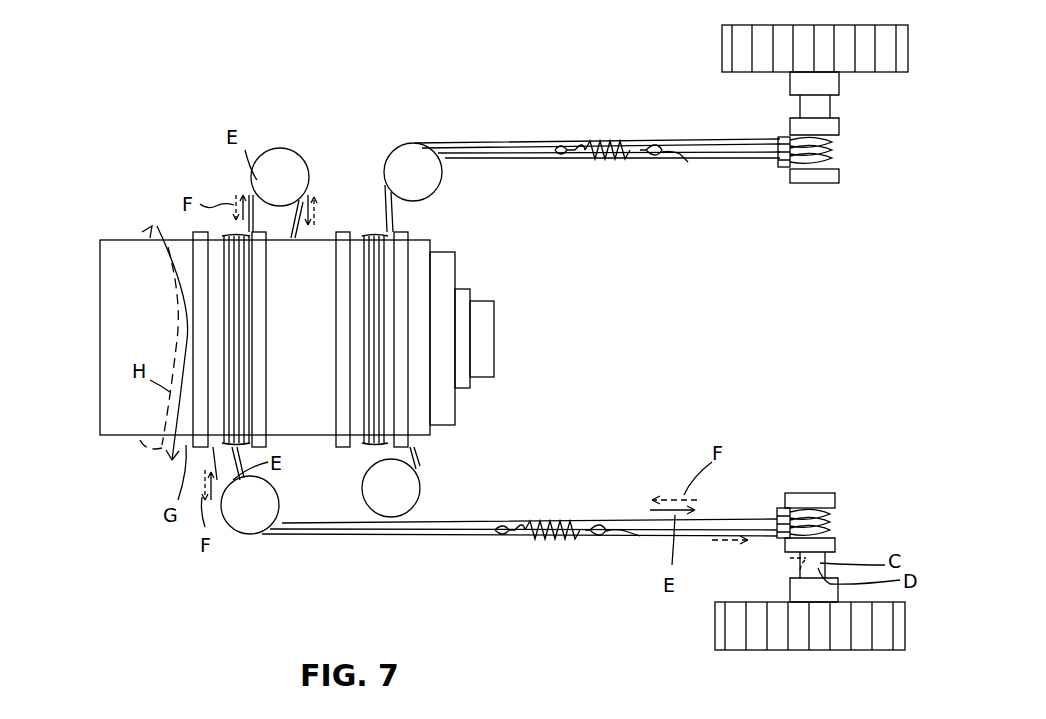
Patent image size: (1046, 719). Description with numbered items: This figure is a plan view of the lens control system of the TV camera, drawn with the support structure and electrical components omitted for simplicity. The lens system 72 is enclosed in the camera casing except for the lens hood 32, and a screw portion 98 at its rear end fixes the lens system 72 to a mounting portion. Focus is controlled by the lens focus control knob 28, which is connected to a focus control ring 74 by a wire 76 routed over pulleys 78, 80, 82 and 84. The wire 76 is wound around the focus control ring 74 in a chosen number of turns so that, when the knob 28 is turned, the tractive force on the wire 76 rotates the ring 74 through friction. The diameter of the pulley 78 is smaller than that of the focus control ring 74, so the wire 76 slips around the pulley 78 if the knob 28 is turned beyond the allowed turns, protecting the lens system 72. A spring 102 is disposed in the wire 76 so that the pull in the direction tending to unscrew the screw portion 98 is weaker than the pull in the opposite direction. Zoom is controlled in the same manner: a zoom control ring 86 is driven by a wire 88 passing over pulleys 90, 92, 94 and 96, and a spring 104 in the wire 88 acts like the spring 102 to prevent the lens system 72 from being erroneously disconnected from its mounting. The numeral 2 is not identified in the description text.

The supply reel 2 is at (893, 46).
The lens focus control knob 28 is at (852, 640).
The lens hood 32 is at (100, 380).
The lens system 72 is at (316, 275).
The focus control ring 74 is at (213, 452).
The wire 76 is at (633, 520).
The pulley 78 is at (812, 500).
The pulley 80 is at (775, 540).
The pulley 82 is at (253, 518).
The pulley 84 is at (281, 160).
The zoom control ring 86 is at (345, 432).
The wire 88 is at (720, 160).
The pulley 90 is at (817, 178).
The pulley 92 is at (783, 170).
The pulley 94 is at (430, 178).
The pulley 96 is at (405, 492).
The screw portion 98 is at (486, 333).
The spring 102 is at (548, 540).
The spring 104 is at (633, 165).